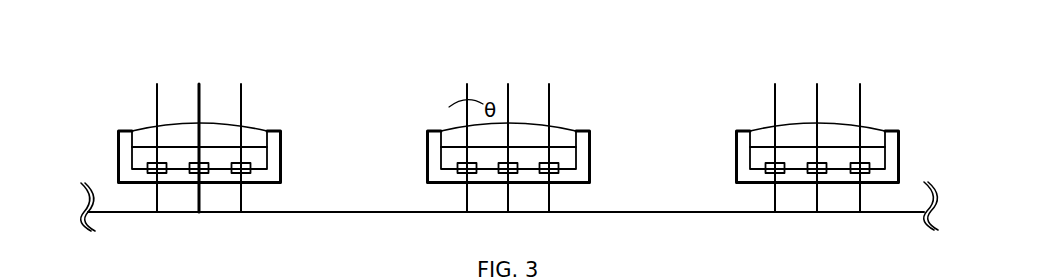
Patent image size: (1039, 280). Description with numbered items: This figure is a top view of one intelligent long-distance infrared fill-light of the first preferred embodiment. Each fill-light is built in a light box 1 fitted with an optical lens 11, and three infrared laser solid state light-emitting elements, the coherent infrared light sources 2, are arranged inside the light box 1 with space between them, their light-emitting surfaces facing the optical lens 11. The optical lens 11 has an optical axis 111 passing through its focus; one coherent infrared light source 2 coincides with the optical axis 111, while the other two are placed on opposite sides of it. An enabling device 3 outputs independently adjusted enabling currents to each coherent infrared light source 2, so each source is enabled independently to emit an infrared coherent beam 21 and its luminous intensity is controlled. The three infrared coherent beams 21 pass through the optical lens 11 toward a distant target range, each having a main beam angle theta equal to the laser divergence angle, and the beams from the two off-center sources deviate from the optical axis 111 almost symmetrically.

The light box 1 is at (108, 100).
The optical lens 11 is at (147, 130).
The optical axis 111 is at (508, 84).
The infrared coherent beam 21 is at (201, 104).
The coherent infrared light source 2 is at (766, 163).
The enabling device 3 is at (766, 172).